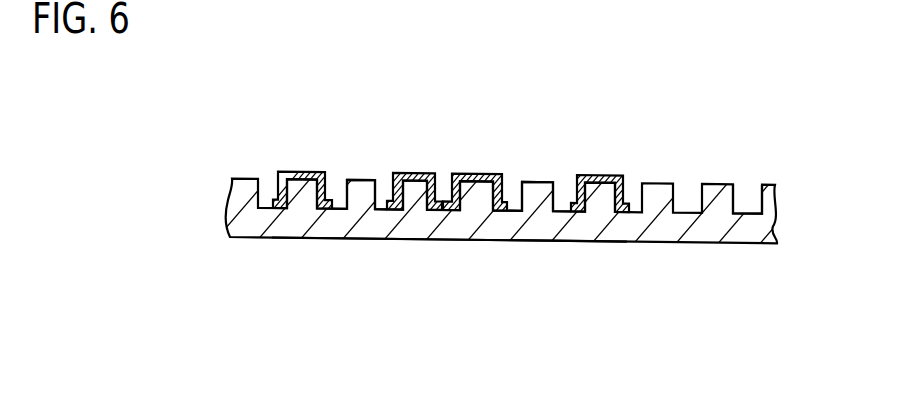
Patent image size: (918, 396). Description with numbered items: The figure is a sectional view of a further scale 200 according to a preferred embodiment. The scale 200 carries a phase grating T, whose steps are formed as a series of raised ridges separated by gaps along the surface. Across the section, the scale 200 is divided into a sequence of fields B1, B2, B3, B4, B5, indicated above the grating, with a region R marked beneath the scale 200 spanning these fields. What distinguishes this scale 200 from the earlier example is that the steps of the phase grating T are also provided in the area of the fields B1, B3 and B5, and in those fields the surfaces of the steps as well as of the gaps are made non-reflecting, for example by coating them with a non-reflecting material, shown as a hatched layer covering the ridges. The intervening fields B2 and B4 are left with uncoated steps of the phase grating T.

The scale 200 is at (764, 243).
The field B1 is at (332, 148).
The field B2 is at (393, 148).
The field B3 is at (510, 148).
The field B4 is at (570, 148).
The field B5 is at (628, 148).
The phase grating T is at (745, 198).
The region R is at (627, 230).